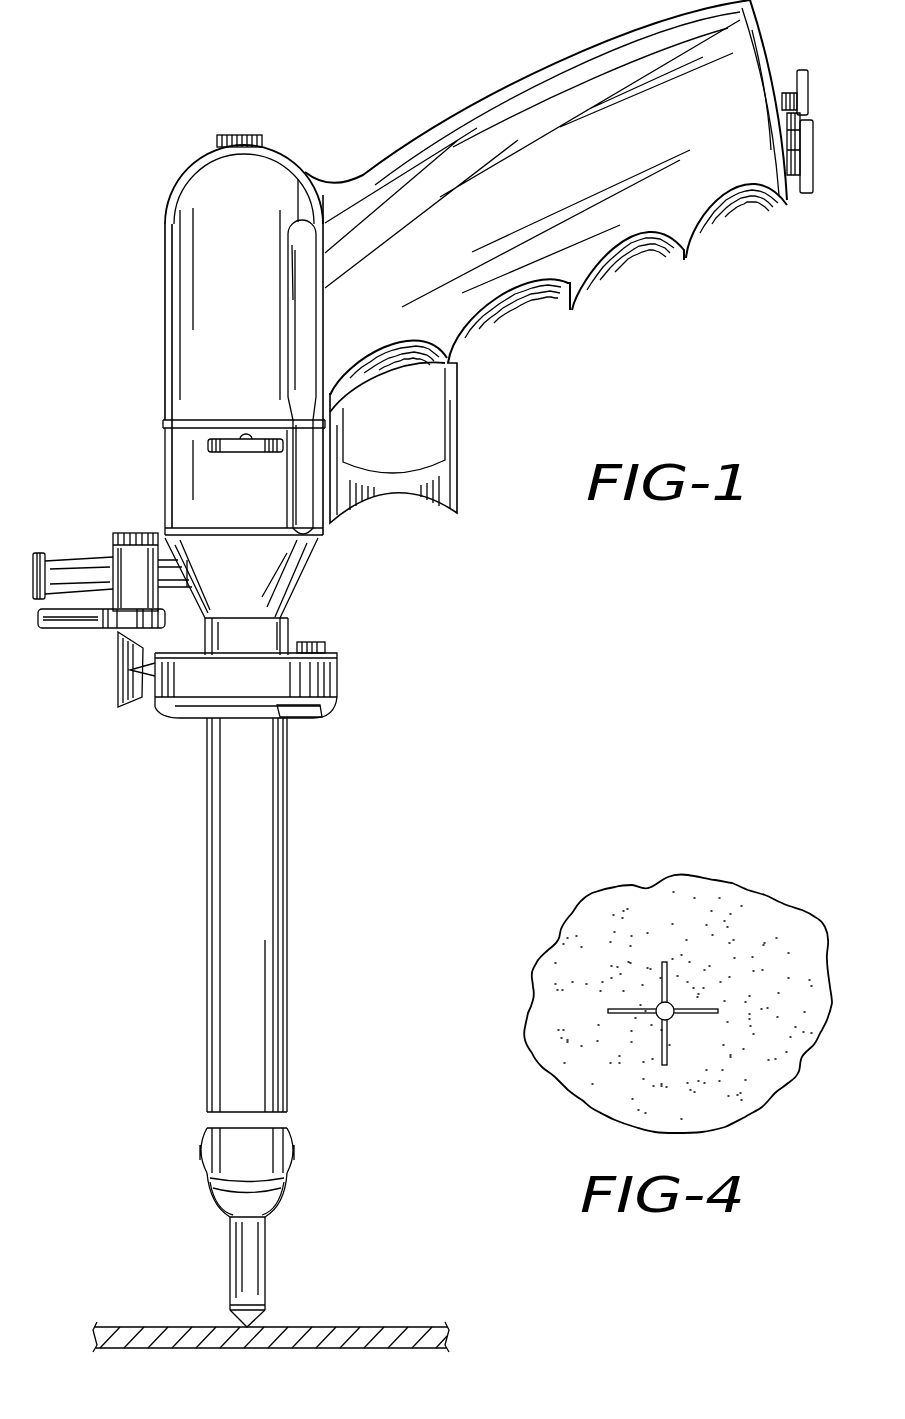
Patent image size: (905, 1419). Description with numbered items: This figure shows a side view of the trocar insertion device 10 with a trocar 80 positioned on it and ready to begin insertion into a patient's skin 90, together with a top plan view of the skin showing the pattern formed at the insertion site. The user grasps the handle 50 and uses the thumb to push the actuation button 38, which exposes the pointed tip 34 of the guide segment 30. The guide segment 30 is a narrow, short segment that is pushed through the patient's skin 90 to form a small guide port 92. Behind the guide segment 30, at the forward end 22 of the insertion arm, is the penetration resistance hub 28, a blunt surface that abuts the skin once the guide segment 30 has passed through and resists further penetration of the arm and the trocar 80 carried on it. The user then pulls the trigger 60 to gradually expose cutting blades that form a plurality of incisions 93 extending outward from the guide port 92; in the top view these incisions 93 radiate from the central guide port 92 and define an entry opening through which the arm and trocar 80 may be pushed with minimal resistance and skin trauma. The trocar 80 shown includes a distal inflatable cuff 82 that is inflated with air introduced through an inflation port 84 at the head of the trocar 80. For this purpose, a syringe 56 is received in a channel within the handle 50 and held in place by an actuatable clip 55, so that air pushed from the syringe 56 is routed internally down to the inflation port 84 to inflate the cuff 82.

In FIG. 1, the trocar insertion device 10 is at (355, 95).
In FIG. 1, the actuation button 38 is at (240, 135).
In FIG. 1, the handle 50 is at (537, 60).
In FIG. 1, the actuatable clip 55 is at (805, 88).
In FIG. 1, the syringe 56 is at (812, 158).
In FIG. 1, the trigger 60 is at (457, 465).
In FIG. 1, the inflation port 84 is at (303, 515).
In FIG. 1, the trocar 80 is at (287, 922).
In FIG. 1, the inflatable cuff 82 is at (293, 1140).
In FIG. 1, the penetration resistance hub 28 is at (213, 1200).
In FIG. 1, the forward end 22 is at (255, 1197).
In FIG. 1, the guide segment 30 is at (268, 1255).
In FIG. 1, the pointed tip 34 is at (238, 1323).
In FIG. 1, the patient's skin 90 is at (358, 1327).
In FIG. 4, the patient's skin 90 is at (707, 960).
In FIG. 4, the guide port 92 is at (668, 1015).
In FIG. 4, the incision 93 is at (628, 1008).